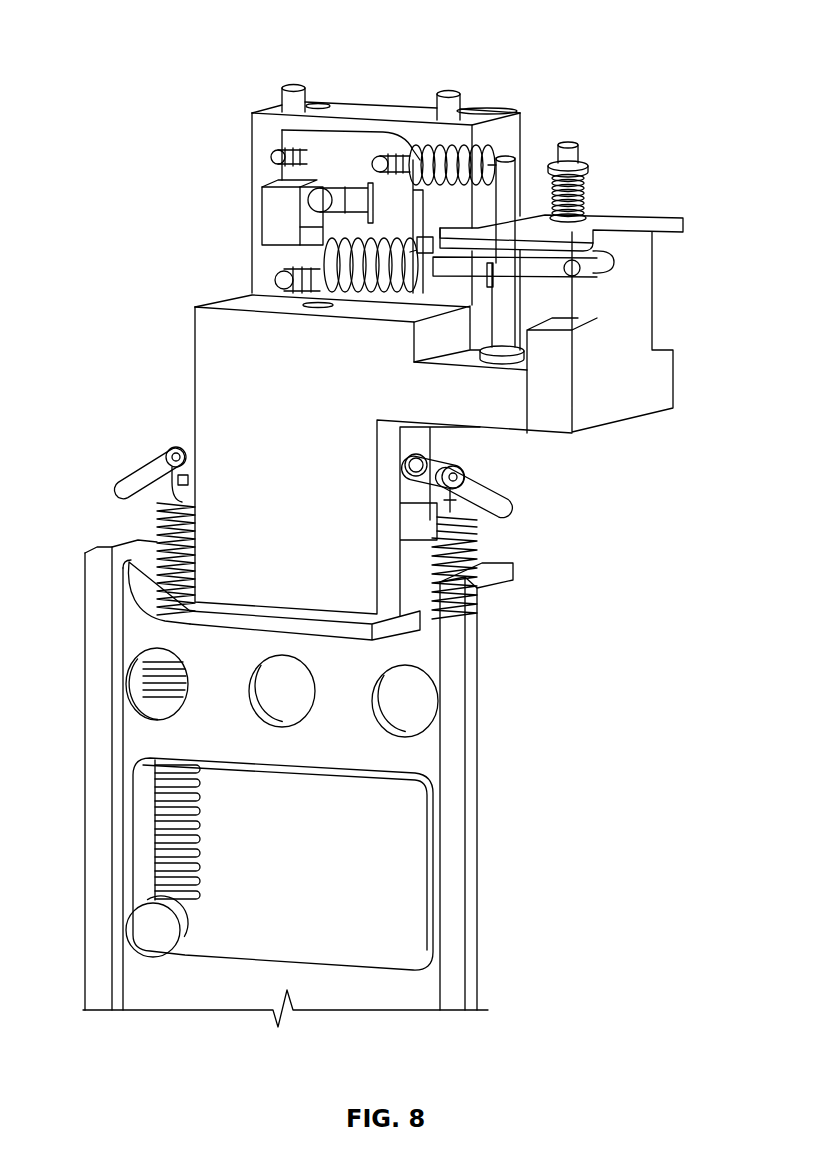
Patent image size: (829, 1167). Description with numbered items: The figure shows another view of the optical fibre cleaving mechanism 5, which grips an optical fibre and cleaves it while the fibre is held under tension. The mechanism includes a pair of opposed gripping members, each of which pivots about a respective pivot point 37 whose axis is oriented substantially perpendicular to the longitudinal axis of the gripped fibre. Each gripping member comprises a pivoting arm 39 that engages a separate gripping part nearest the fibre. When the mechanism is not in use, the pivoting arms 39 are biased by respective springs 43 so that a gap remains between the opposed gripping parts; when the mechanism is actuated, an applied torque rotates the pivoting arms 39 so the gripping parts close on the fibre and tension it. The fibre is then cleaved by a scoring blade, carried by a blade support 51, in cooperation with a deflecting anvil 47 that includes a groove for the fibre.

The optical fibre cleaving mechanism 5 is at (226, 32).
The pivot point 37 is at (660, 388).
The pivoting arm 39 is at (125, 492).
The spring 43 is at (92, 861).
The deflecting anvil 47 is at (268, 218).
The blade support 51 is at (688, 223).